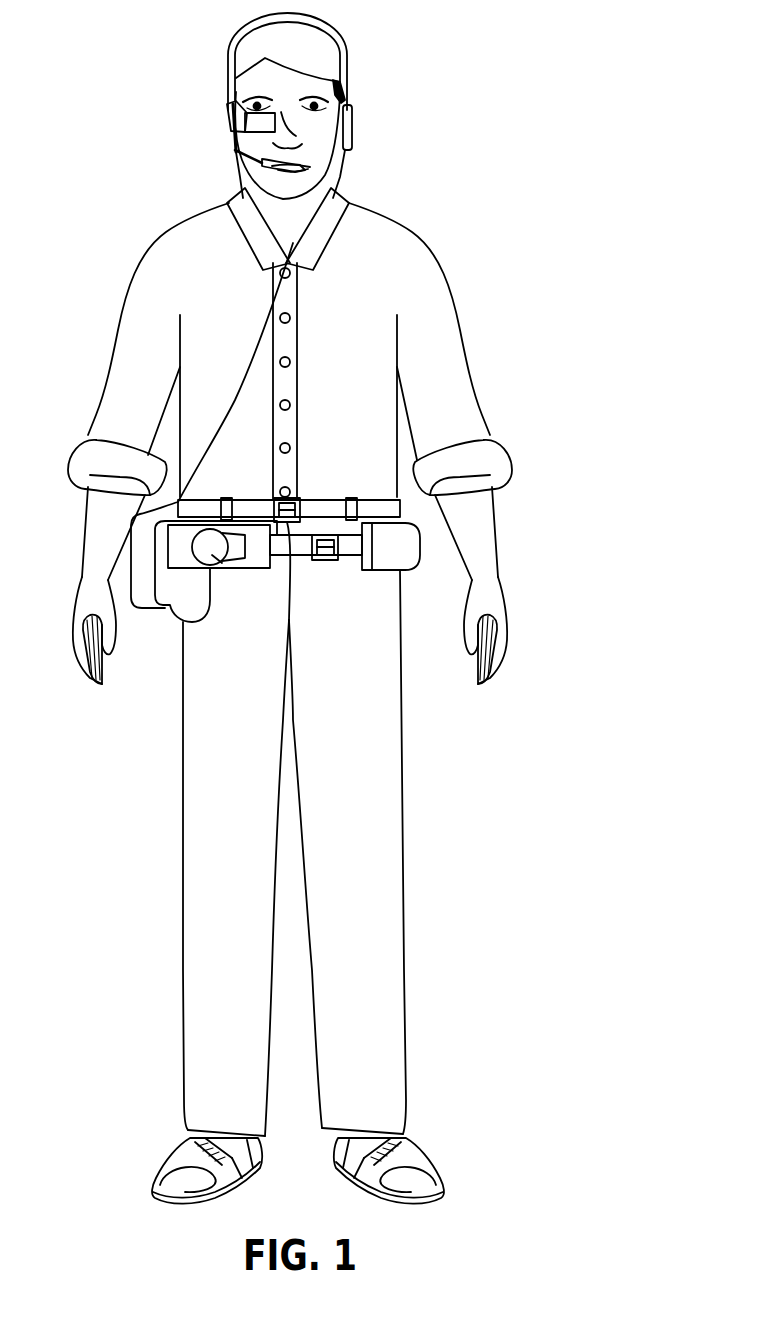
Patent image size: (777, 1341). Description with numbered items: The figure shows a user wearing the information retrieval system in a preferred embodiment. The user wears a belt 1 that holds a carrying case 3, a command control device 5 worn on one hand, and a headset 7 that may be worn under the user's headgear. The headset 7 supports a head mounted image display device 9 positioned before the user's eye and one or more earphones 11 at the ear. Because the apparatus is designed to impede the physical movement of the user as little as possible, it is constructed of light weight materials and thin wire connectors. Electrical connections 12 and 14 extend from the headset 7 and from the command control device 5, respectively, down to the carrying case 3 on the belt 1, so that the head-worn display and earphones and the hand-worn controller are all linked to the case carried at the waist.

The belt 1 is at (347, 547).
The carrying case 3 is at (140, 568).
The command control device 5 is at (220, 568).
The headset 7 is at (344, 42).
The head mounted image display device 9 is at (240, 131).
The earphone 11 is at (353, 123).
The electrical connection 12 is at (345, 177).
The electrical connection 14 is at (183, 650).